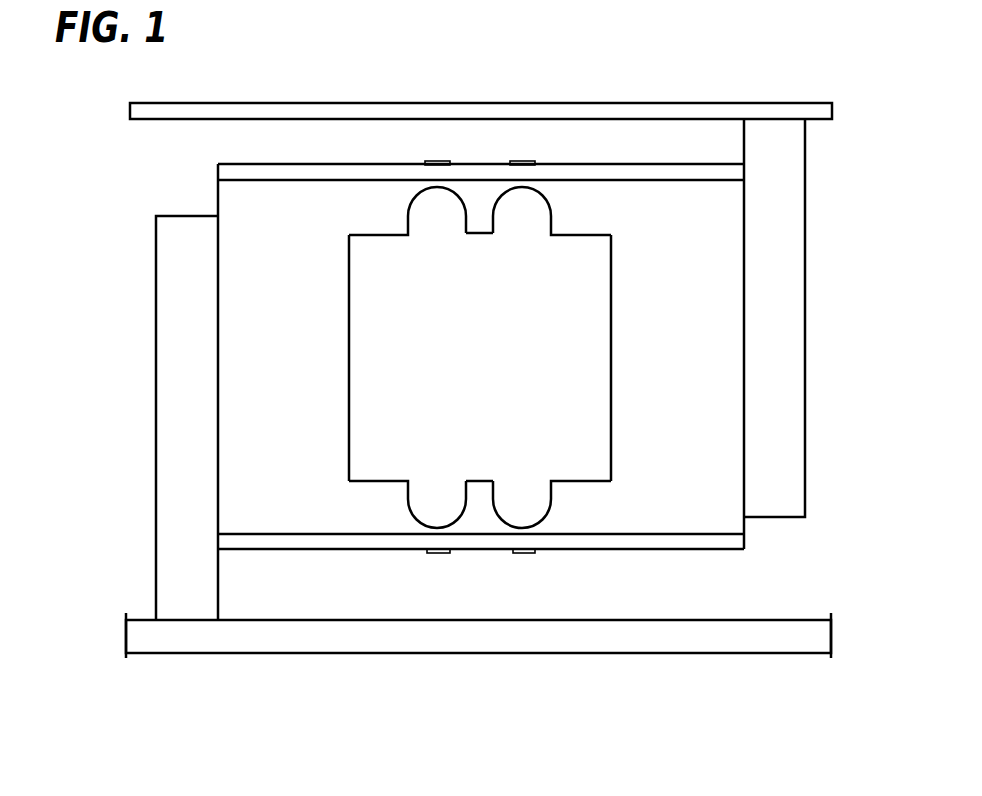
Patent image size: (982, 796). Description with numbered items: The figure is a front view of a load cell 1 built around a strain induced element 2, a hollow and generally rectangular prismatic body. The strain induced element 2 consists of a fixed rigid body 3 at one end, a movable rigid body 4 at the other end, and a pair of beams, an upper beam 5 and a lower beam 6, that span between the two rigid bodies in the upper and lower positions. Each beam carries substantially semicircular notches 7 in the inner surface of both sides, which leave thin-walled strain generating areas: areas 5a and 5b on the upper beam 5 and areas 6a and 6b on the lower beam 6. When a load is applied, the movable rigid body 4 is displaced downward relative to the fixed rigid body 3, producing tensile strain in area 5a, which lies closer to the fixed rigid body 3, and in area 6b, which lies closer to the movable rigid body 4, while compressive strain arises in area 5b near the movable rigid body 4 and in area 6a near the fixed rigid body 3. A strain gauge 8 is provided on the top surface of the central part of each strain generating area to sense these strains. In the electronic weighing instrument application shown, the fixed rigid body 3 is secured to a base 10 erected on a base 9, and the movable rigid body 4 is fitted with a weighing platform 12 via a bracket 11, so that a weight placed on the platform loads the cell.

The load cell 1 is at (838, 174).
The strain induced element 2 is at (212, 191).
The fixed rigid body 3 is at (245, 418).
The movable rigid body 4 is at (732, 423).
The upper beam 5 is at (582, 227).
The strain generating area 5a is at (428, 180).
The strain generating area 5b is at (537, 185).
The lower beam 6 is at (388, 503).
The strain generating area 6a is at (430, 535).
The strain generating area 6b is at (530, 533).
The semicircular notches 7 is at (523, 218).
The strain gauge 8 is at (450, 163).
The base 9 is at (452, 638).
The base 10 is at (173, 308).
The bracket 11 is at (788, 278).
The weighing platform 12 is at (606, 106).